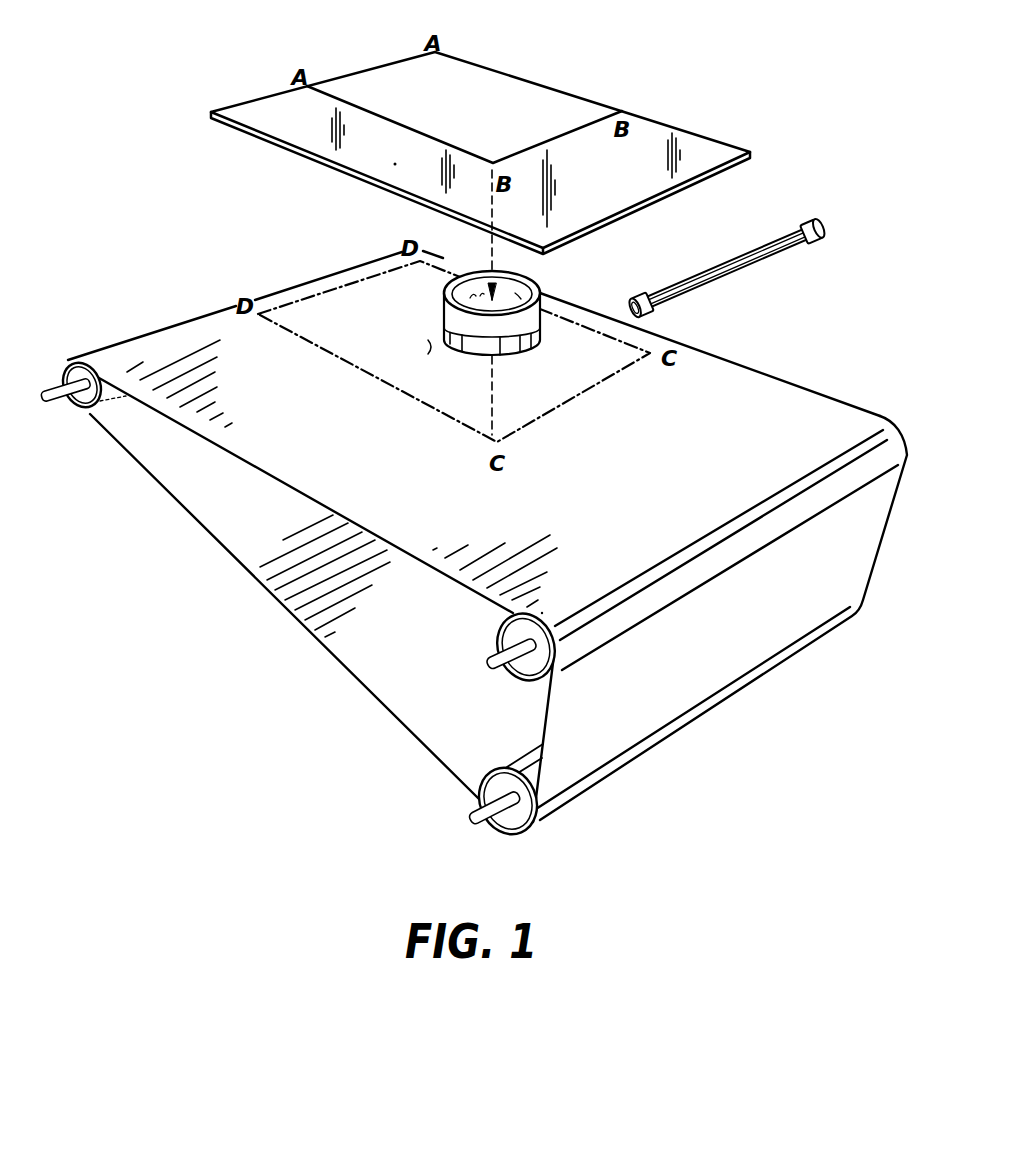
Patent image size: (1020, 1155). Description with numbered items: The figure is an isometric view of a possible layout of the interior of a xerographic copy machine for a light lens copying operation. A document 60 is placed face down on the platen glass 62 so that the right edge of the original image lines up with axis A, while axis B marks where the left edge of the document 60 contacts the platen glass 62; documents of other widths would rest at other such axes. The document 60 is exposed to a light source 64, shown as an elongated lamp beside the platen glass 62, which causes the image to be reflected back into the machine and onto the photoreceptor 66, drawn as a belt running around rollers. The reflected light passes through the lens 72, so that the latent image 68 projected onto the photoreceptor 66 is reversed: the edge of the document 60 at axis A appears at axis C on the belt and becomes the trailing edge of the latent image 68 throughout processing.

The document 60 is at (571, 107).
The platen glass 62 is at (702, 148).
The light source 64 is at (757, 268).
The photoreceptor 66 is at (823, 393).
The latent image 68 is at (357, 280).
The lens 72 is at (534, 285).